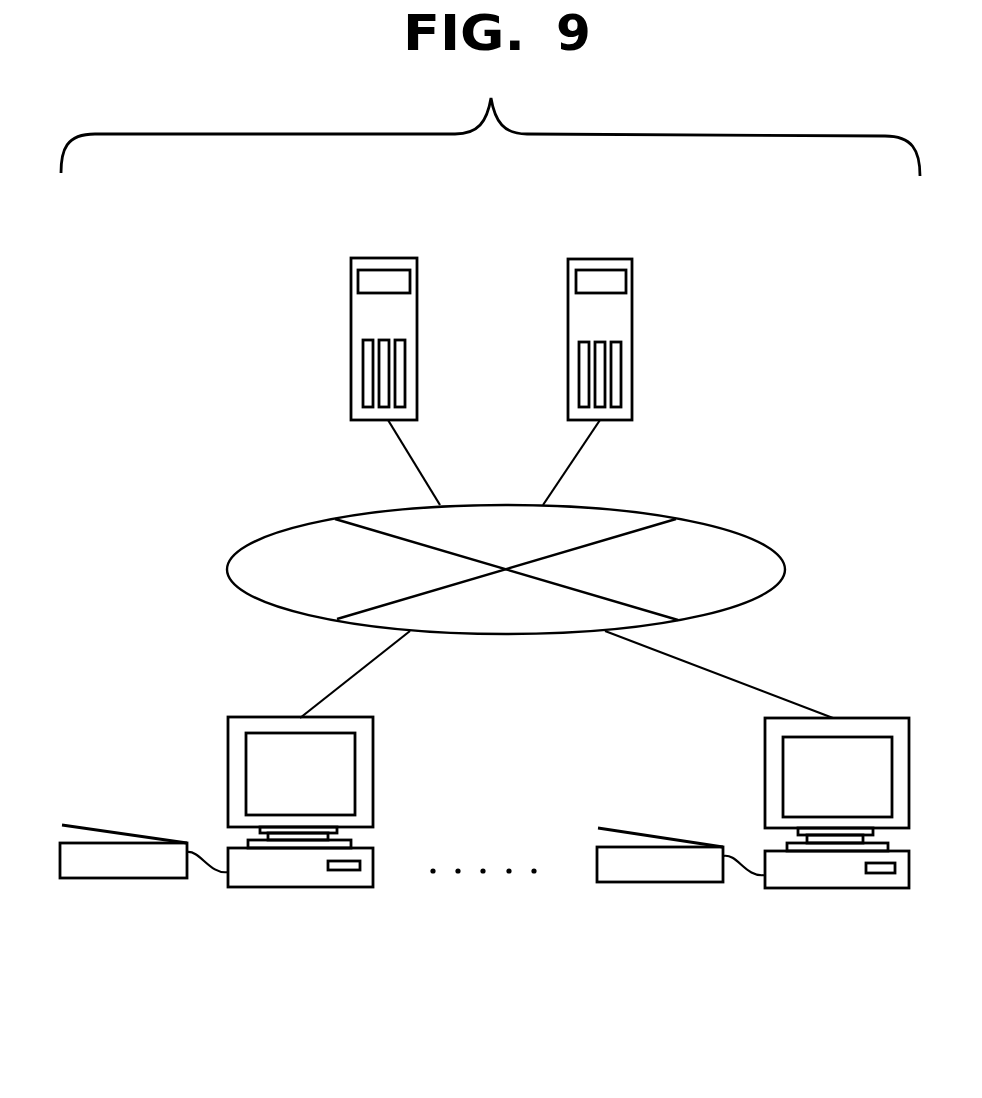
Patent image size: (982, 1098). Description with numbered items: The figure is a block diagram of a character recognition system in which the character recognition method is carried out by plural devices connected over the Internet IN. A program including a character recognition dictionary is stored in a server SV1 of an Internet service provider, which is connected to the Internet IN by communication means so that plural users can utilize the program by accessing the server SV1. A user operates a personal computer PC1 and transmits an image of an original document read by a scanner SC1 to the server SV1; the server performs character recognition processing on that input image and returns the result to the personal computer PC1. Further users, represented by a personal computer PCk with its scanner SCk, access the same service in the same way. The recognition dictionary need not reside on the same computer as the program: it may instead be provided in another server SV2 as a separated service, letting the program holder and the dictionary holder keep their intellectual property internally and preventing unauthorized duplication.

The server SV1 is at (388, 258).
The server SV2 is at (600, 259).
The Internet IN is at (785, 570).
The personal computer PC1 is at (300, 887).
The scanner SC1 is at (118, 878).
The personal computer PCk is at (835, 888).
The scanner SCk is at (655, 882).